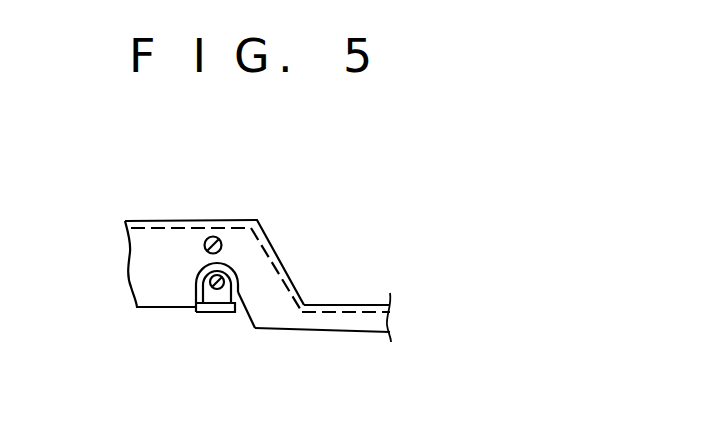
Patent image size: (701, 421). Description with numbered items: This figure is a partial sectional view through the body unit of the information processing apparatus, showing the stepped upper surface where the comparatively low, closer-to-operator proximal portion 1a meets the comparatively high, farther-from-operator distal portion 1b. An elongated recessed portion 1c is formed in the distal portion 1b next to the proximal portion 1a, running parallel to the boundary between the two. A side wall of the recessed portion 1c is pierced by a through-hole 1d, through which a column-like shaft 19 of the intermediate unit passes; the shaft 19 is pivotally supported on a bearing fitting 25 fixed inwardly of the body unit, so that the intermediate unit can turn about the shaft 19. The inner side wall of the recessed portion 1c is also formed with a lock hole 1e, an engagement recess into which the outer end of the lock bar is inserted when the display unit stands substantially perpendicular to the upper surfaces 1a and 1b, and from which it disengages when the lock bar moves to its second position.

The proximal portion 1a is at (355, 305).
The distal portion 1b is at (150, 221).
The recessed portion 1c is at (188, 240).
The through-hole 1d is at (225, 313).
The lock hole 1e is at (218, 236).
The shaft 19 is at (222, 277).
The bearing fitting 25 is at (197, 292).